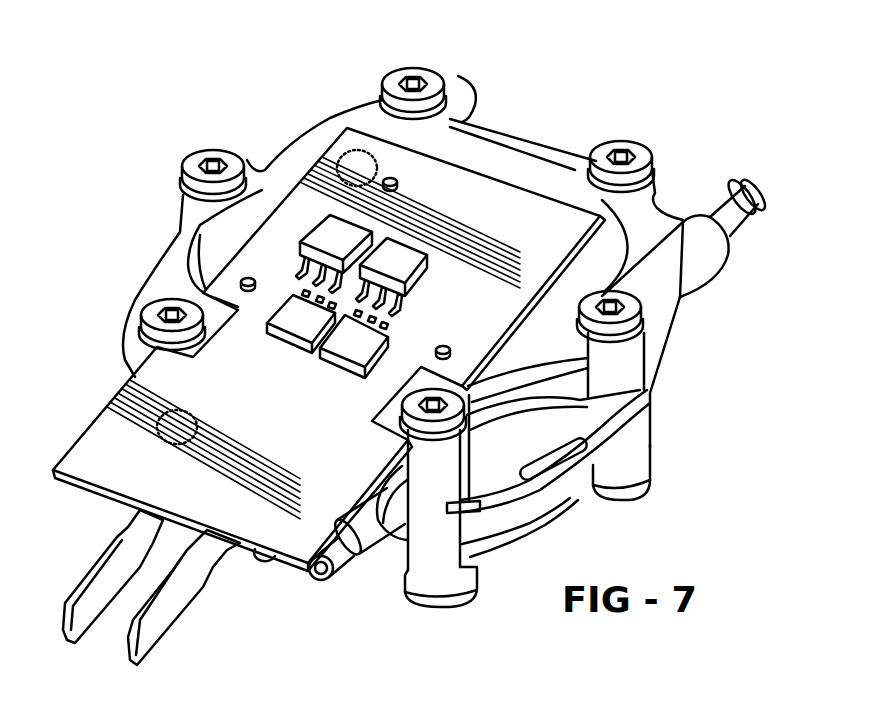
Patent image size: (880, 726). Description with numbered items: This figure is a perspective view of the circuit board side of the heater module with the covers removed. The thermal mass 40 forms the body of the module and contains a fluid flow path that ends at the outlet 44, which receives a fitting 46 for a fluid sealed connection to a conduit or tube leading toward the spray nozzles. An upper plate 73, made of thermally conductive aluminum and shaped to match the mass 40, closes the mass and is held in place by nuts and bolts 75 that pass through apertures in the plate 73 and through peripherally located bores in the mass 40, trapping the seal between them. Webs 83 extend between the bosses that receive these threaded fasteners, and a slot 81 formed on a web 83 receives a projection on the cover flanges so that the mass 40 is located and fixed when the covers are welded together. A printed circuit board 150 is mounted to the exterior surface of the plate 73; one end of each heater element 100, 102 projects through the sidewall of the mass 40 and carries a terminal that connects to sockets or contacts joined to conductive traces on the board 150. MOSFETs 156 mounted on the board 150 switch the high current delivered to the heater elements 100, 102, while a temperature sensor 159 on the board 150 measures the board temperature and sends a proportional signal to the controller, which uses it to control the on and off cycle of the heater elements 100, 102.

The thermal mass 40 is at (594, 134).
The outlet 44 is at (760, 172).
The fitting 46 is at (764, 194).
The upper plate 73 is at (488, 145).
The nuts and bolts 75 is at (397, 77).
The slot 81 is at (568, 460).
The web 83 is at (153, 291).
The heater element 100 is at (347, 566).
The heater element 102 is at (263, 556).
The printed circuit board 150 is at (135, 397).
The MOSFET 156 is at (340, 232).
The temperature sensor 159 is at (355, 150).